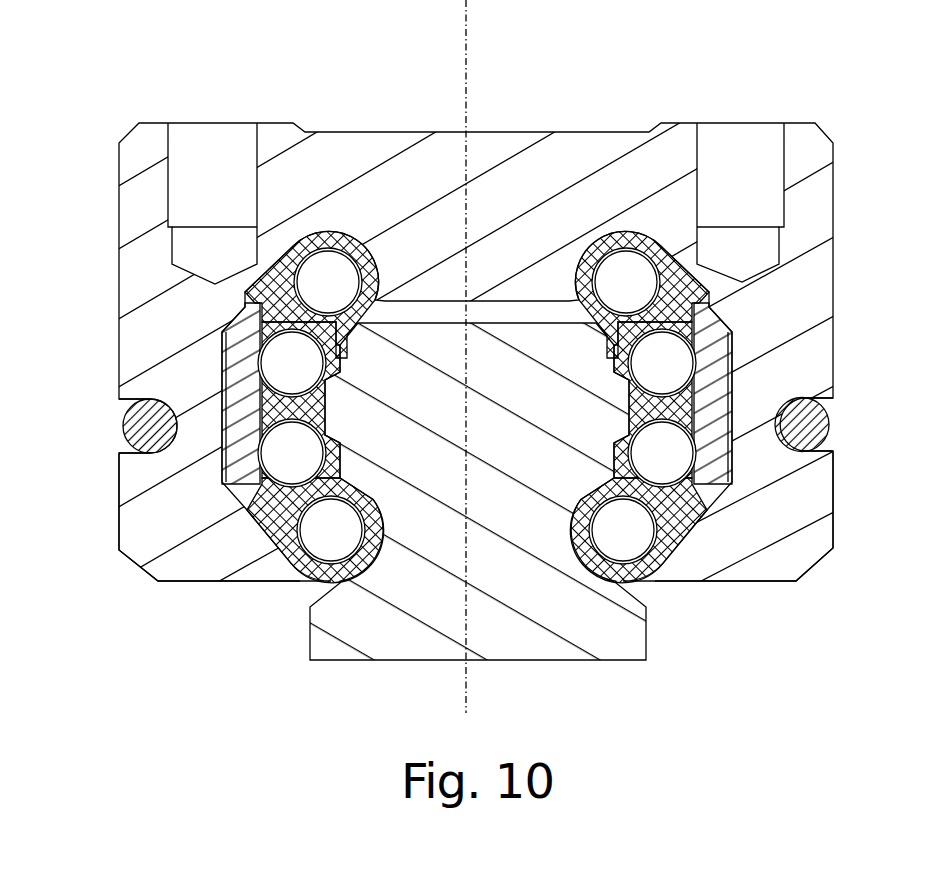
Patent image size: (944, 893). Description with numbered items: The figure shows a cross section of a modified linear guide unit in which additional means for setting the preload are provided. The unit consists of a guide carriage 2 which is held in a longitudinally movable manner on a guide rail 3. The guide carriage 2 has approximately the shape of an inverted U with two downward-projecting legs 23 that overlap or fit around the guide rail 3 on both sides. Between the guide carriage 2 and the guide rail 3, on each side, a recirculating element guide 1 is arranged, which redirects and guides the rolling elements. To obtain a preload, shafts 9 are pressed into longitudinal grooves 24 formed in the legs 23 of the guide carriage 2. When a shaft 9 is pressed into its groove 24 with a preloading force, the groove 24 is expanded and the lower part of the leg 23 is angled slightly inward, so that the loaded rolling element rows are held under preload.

The recirculating element guide 1 is at (240, 388).
The guide carriage 2 is at (371, 147).
The guide rail 3 is at (608, 642).
The shaft 9 is at (123, 423).
The leg 23 is at (150, 535).
The longitudinal groove 24 is at (117, 407).